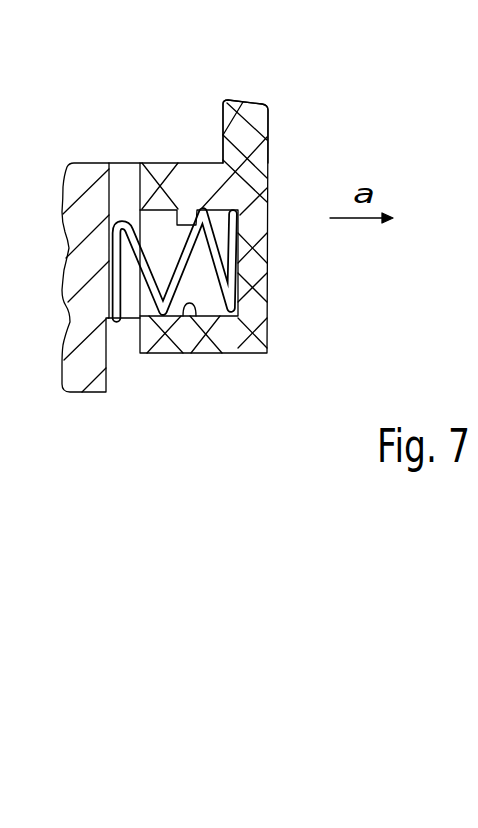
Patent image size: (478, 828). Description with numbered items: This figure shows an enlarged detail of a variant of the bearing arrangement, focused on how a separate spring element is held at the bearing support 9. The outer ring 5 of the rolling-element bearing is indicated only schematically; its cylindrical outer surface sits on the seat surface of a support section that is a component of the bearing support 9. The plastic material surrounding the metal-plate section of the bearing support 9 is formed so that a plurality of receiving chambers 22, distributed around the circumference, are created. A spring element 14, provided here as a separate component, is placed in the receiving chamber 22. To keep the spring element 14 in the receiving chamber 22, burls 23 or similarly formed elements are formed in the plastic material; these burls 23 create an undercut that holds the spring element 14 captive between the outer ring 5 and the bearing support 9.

The outer ring 5 is at (90, 200).
The bearing support 9 is at (265, 115).
The spring element 14 is at (142, 272).
The receiving chamber 22 is at (202, 273).
The burl 23 is at (193, 212).